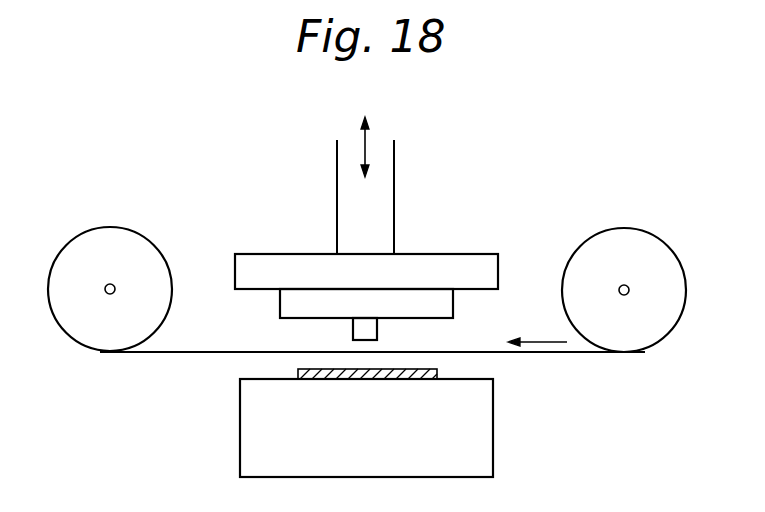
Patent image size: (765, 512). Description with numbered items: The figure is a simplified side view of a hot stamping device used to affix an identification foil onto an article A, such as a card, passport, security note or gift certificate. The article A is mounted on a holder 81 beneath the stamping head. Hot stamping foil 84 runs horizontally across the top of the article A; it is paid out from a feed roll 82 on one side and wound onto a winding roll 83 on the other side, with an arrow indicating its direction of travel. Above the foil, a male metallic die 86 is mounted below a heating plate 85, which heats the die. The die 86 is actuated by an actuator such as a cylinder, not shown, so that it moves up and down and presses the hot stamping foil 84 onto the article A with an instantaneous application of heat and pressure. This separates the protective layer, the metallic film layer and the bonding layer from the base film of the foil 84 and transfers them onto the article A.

The holder 81 is at (248, 433).
The feed roll 82 is at (630, 235).
The winding roll 83 is at (116, 229).
The hot stamping foil 84 is at (568, 354).
The heating plate 85 is at (275, 257).
The male metallic die 86 is at (289, 302).
The article A is at (302, 374).